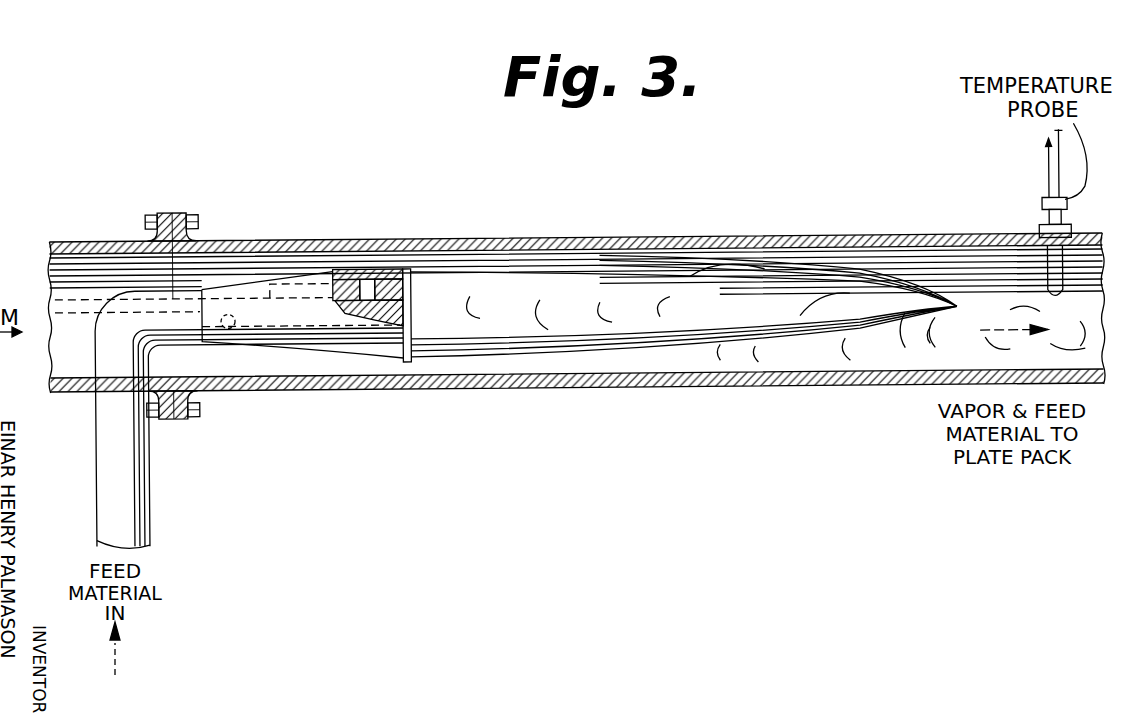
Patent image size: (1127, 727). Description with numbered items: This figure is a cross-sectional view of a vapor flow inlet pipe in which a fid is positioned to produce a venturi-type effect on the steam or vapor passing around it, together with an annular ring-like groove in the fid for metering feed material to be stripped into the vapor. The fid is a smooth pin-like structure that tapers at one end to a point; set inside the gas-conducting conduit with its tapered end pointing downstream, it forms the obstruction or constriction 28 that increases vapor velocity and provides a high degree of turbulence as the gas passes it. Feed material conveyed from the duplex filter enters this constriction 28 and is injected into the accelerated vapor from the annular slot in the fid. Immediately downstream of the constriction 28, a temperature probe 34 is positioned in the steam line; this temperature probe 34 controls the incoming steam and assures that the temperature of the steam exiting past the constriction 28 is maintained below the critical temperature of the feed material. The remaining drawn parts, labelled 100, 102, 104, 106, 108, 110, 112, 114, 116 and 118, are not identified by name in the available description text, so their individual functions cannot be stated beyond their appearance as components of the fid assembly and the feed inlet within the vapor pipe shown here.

The obstruction 28 is at (720, 238).
The temperature probe 34 is at (1045, 220).
The nozzle sleeve 100 is at (520, 276).
The sleeve outlet tip 102 is at (906, 322).
The nozzle body 104 is at (330, 356).
The seal member 106 is at (408, 316).
The retaining ring 108 is at (408, 298).
The mounting plate 110 is at (406, 362).
The sleeve attachment collar 112 is at (420, 270).
The feed tube 114 is at (226, 352).
The feed inlet pipe 116 is at (97, 438).
The flanged conduit section 118 is at (105, 242).